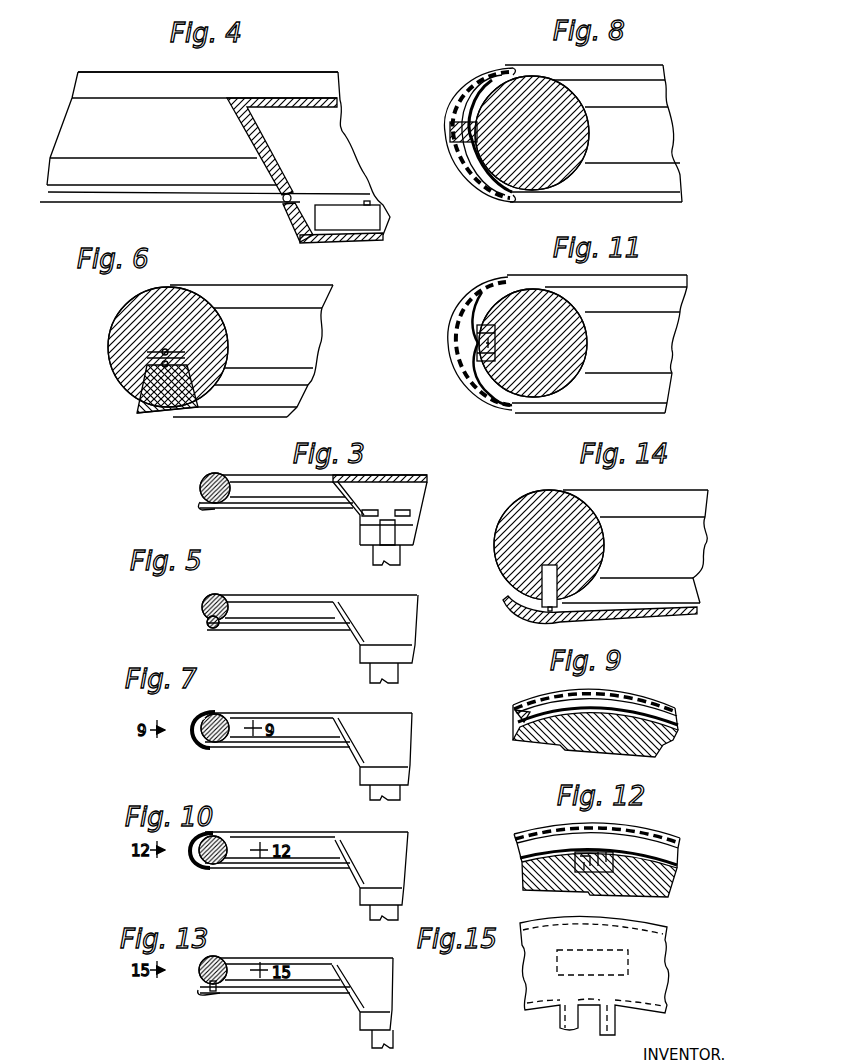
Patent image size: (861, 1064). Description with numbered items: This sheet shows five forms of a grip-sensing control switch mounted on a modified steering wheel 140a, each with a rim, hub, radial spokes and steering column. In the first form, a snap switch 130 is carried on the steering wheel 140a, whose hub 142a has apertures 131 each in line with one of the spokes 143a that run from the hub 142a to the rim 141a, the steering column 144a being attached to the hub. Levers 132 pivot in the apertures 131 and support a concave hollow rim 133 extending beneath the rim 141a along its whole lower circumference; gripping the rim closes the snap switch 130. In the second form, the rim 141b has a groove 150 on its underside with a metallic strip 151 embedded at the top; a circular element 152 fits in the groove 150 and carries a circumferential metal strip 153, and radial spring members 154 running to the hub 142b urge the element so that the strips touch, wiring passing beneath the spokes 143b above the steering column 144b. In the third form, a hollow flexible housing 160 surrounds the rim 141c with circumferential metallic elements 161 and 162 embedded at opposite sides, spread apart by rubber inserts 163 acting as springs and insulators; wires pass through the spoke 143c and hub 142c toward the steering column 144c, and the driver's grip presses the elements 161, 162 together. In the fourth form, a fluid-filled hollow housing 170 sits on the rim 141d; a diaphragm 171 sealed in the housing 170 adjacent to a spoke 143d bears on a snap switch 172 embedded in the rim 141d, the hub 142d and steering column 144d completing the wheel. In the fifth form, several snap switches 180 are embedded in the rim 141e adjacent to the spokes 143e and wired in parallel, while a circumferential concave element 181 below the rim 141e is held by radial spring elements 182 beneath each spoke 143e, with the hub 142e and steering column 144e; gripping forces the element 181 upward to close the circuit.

In FIG. 4, the snap switch 130 is at (375, 215).
In FIG. 3, the snap switch 130 is at (386, 510).
In FIG. 4, the apertures 131 is at (282, 206).
In FIG. 4, the levers 132 is at (135, 198).
In FIG. 3, the levers 132 is at (303, 510).
In FIG. 3, the concave hollow rim 133 is at (200, 509).
In FIG. 4, the modified steering wheel 140a is at (342, 80).
In FIG. 4, the rim 141a is at (145, 76).
In FIG. 3, the rim 141a is at (200, 484).
In FIG. 6, the rim 141b is at (283, 288).
In FIG. 5, the rim 141b is at (203, 612).
In FIG. 8, the rim 141c is at (540, 95).
In FIG. 7, the rim 141c is at (215, 745).
In FIG. 9, the rim 141c is at (645, 750).
In FIG. 11, the rim 141d is at (525, 395).
In FIG. 10, the rim 141d is at (214, 866).
In FIG. 12, the rim 141d is at (624, 877).
In FIG. 13, the rim 141e is at (224, 958).
In FIG. 14, the rim 141e is at (580, 500).
In FIG. 4, the hub 142a is at (338, 103).
In FIG. 3, the hub 142a is at (426, 492).
In FIG. 5, the hub 142b is at (408, 626).
In FIG. 7, the hub 142c is at (404, 740).
In FIG. 10, the hub 142d is at (395, 857).
In FIG. 13, the hub 142e is at (392, 1000).
In FIG. 4, the spokes 143a is at (193, 141).
In FIG. 3, the spokes 143a is at (247, 478).
In FIG. 6, the spokes 143b is at (287, 343).
In FIG. 5, the spokes 143b is at (290, 606).
In FIG. 8, the spoke 143c is at (655, 131).
In FIG. 7, the spoke 143c is at (280, 722).
In FIG. 11, the spoke 143d is at (654, 349).
In FIG. 10, the spoke 143d is at (300, 860).
In FIG. 13, the spokes 143e is at (290, 962).
In FIG. 14, the spokes 143e is at (672, 551).
In FIG. 15, the spokes 143e is at (560, 1020).
In FIG. 3, the steering column 144a is at (373, 556).
In FIG. 5, the steering column 144b is at (398, 676).
In FIG. 7, the steering column 144c is at (400, 795).
In FIG. 10, the steering column 144d is at (370, 914).
In FIG. 13, the steering column 144e is at (372, 1042).
In FIG. 6, the groove 150 is at (140, 388).
In FIG. 6, the metallic strip 151 is at (160, 355).
In FIG. 6, the circular element 152 is at (137, 410).
In FIG. 6, the circumferential metal strip 153 is at (158, 365).
In FIG. 5, the radial spring members 154 is at (270, 632).
In FIG. 8, the hollow flexible housing 160 is at (498, 75).
In FIG. 7, the hollow flexible housing 160 is at (222, 712).
In FIG. 9, the hollow flexible housing 160 is at (662, 703).
In FIG. 8, the circumferential metallic element 161 is at (470, 138).
In FIG. 9, the circumferential metallic element 161 is at (678, 715).
In FIG. 8, the circumferential metallic element 162 is at (478, 148).
In FIG. 9, the circumferential metallic element 162 is at (678, 728).
In FIG. 8, the rubber inserts 163 is at (456, 122).
In FIG. 9, the rubber inserts 163 is at (518, 718).
In FIG. 11, the hollow housing 170 is at (485, 286).
In FIG. 10, the hollow housing 170 is at (224, 832).
In FIG. 12, the hollow housing 170 is at (668, 834).
In FIG. 11, the diaphragm 171 is at (488, 355).
In FIG. 12, the diaphragm 171 is at (583, 856).
In FIG. 11, the snap switch 172 is at (490, 343).
In FIG. 12, the snap switch 172 is at (600, 860).
In FIG. 14, the snap switches 180 is at (540, 597).
In FIG. 15, the snap switches 180 is at (628, 962).
In FIG. 13, the circumferential concave element 181 is at (204, 996).
In FIG. 14, the circumferential concave element 181 is at (516, 618).
In FIG. 13, the radial spring elements 182 is at (285, 996).